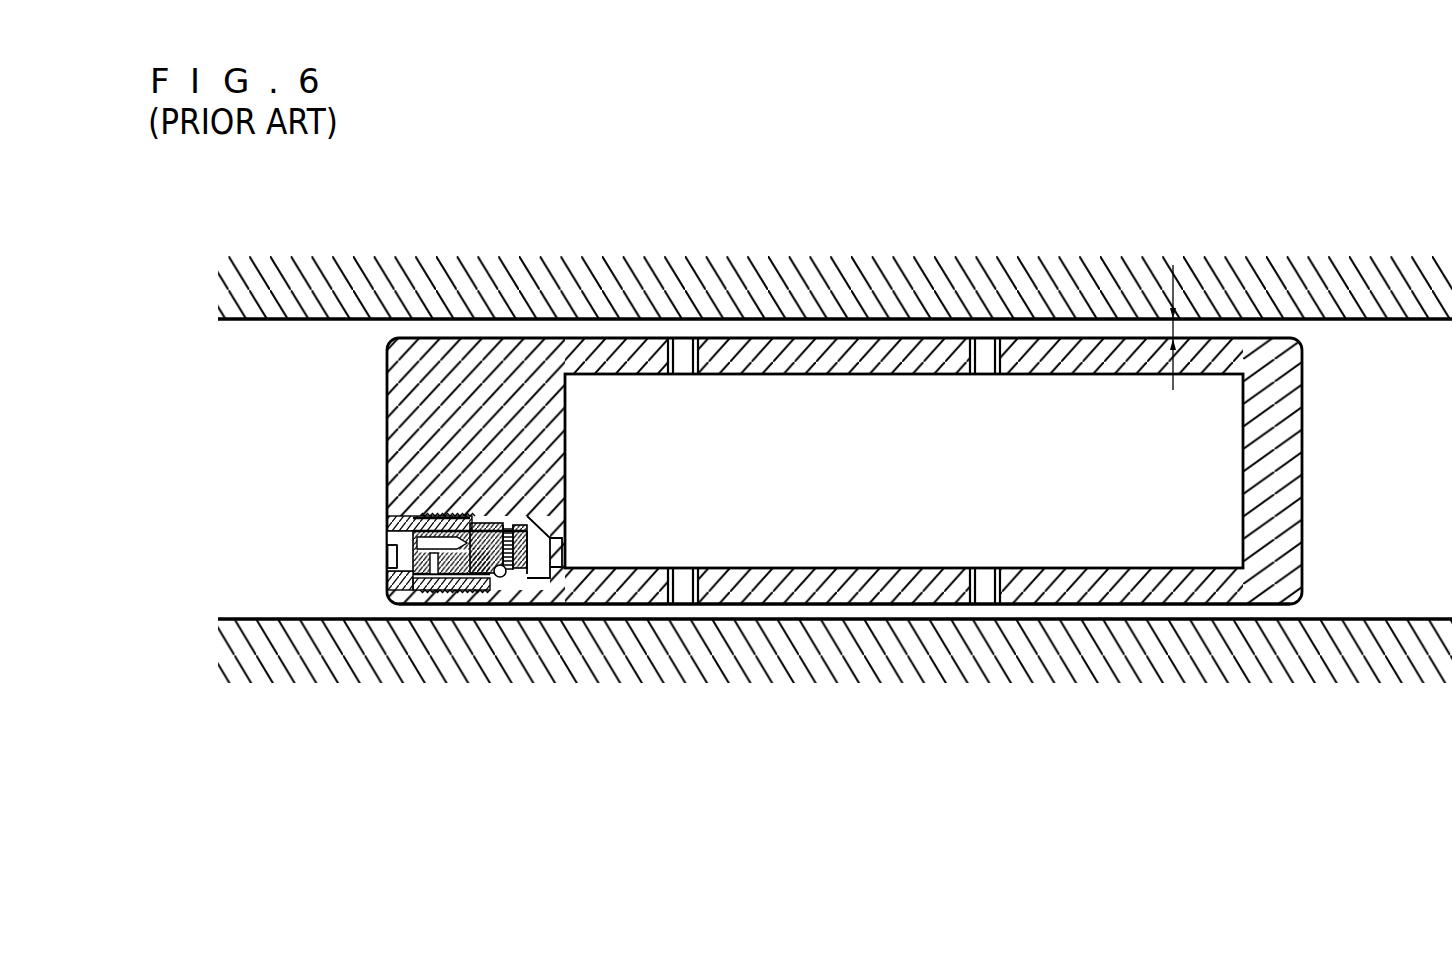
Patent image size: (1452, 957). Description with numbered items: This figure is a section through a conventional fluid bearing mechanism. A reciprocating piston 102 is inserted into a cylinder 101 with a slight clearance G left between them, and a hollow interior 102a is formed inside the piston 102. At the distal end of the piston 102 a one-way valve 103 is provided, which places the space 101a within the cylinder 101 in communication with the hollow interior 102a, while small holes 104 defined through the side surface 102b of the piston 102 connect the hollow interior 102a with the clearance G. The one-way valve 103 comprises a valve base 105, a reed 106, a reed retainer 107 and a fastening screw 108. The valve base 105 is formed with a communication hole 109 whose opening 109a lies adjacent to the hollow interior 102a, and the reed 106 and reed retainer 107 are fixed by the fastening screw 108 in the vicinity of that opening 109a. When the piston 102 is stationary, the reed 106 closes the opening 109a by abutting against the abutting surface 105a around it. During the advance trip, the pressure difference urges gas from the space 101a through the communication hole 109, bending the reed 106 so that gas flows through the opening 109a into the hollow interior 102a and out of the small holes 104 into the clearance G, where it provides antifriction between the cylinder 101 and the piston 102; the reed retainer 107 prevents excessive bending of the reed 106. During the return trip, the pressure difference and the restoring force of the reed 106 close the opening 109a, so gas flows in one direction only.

The cylinder 101 is at (314, 319).
The space within the cylinder 101a is at (326, 446).
The reciprocating piston 102 is at (1305, 472).
The hollow interior 102a is at (912, 474).
The side surface of the piston 102b is at (1045, 605).
The one-way valve 103 is at (383, 523).
The small holes 104 is at (985, 585).
The valve base 105 is at (440, 517).
The abutting surface 105a is at (430, 580).
The reed 106 is at (433, 580).
The reed retainer 107 is at (485, 583).
The fastening screw 108 is at (520, 585).
The communication hole 109 is at (470, 522).
The opening of the communication hole 109a is at (393, 558).
The clearance G is at (1175, 280).